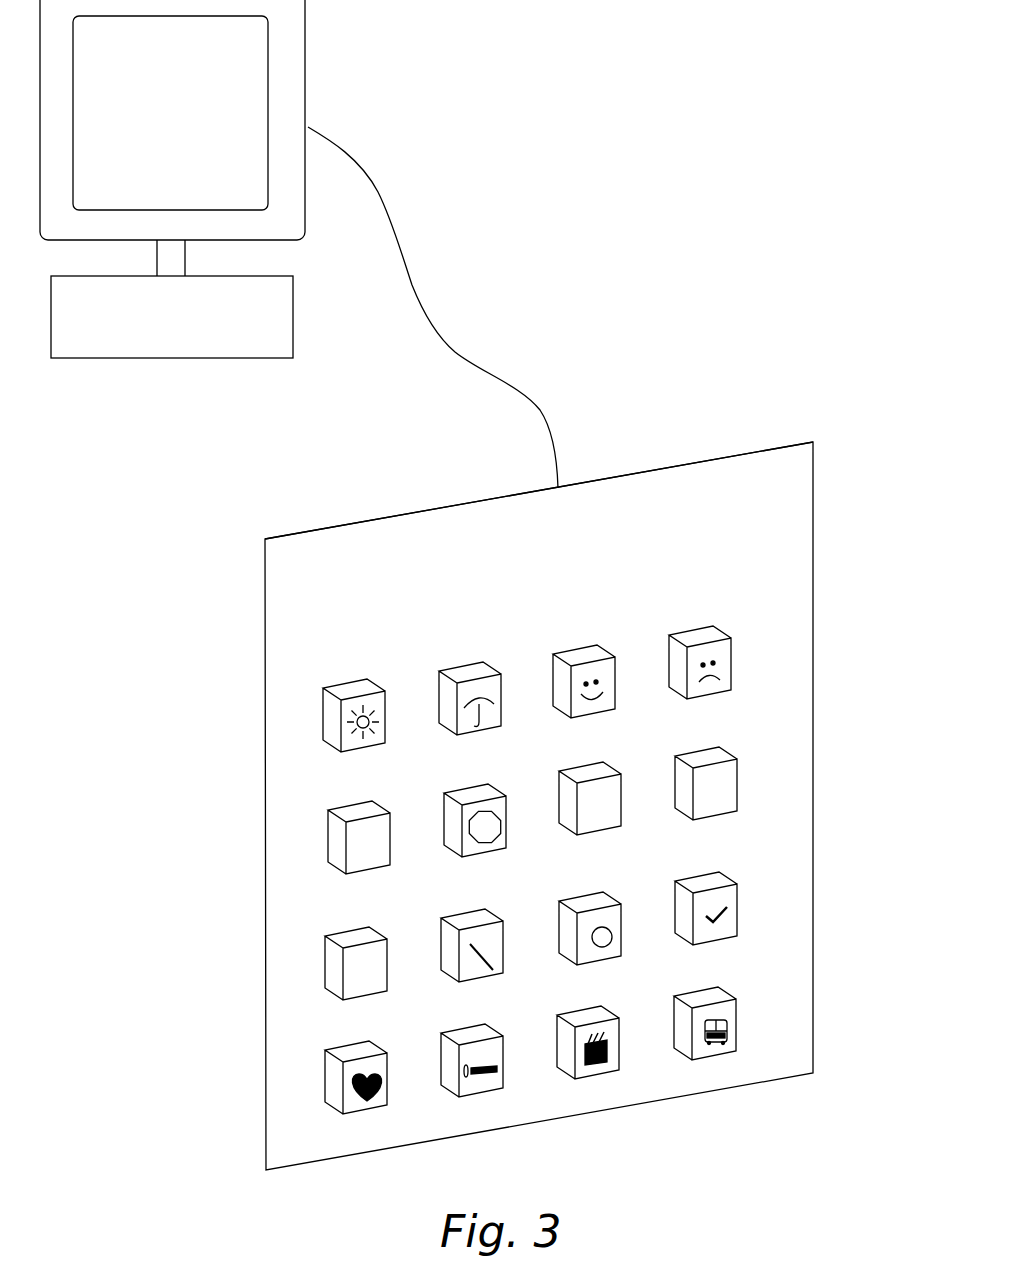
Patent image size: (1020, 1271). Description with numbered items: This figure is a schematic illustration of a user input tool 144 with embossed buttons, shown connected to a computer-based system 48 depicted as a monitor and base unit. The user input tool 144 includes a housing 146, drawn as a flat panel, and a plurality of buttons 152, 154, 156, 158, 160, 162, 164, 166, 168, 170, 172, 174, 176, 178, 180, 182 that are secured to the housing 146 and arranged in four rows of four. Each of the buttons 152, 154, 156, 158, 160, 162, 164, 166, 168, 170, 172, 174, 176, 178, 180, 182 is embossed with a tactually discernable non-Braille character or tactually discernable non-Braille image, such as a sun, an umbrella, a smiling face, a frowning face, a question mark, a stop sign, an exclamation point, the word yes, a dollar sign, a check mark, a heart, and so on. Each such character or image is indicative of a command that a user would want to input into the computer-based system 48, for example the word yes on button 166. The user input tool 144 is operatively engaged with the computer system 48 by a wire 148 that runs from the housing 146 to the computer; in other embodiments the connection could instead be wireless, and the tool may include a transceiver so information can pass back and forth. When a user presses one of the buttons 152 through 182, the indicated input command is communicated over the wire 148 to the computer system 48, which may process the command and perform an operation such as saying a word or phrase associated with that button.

The computer-based system 48 is at (305, 40).
The wire 148 is at (412, 285).
The user input tool 144 is at (778, 548).
The housing 146 is at (722, 492).
The button 152 is at (355, 696).
The button 154 is at (471, 679).
The button 156 is at (585, 662).
The button 158 is at (701, 643).
The button 160 is at (360, 818).
The button 162 is at (476, 801).
The button 164 is at (591, 779).
The button 166 is at (707, 764).
The button 168 is at (357, 944).
The button 170 is at (473, 926).
The button 172 is at (591, 909).
The button 174 is at (707, 889).
The button 176 is at (357, 1058).
The button 178 is at (473, 1041).
The button 180 is at (589, 1023).
The button 182 is at (706, 1004).